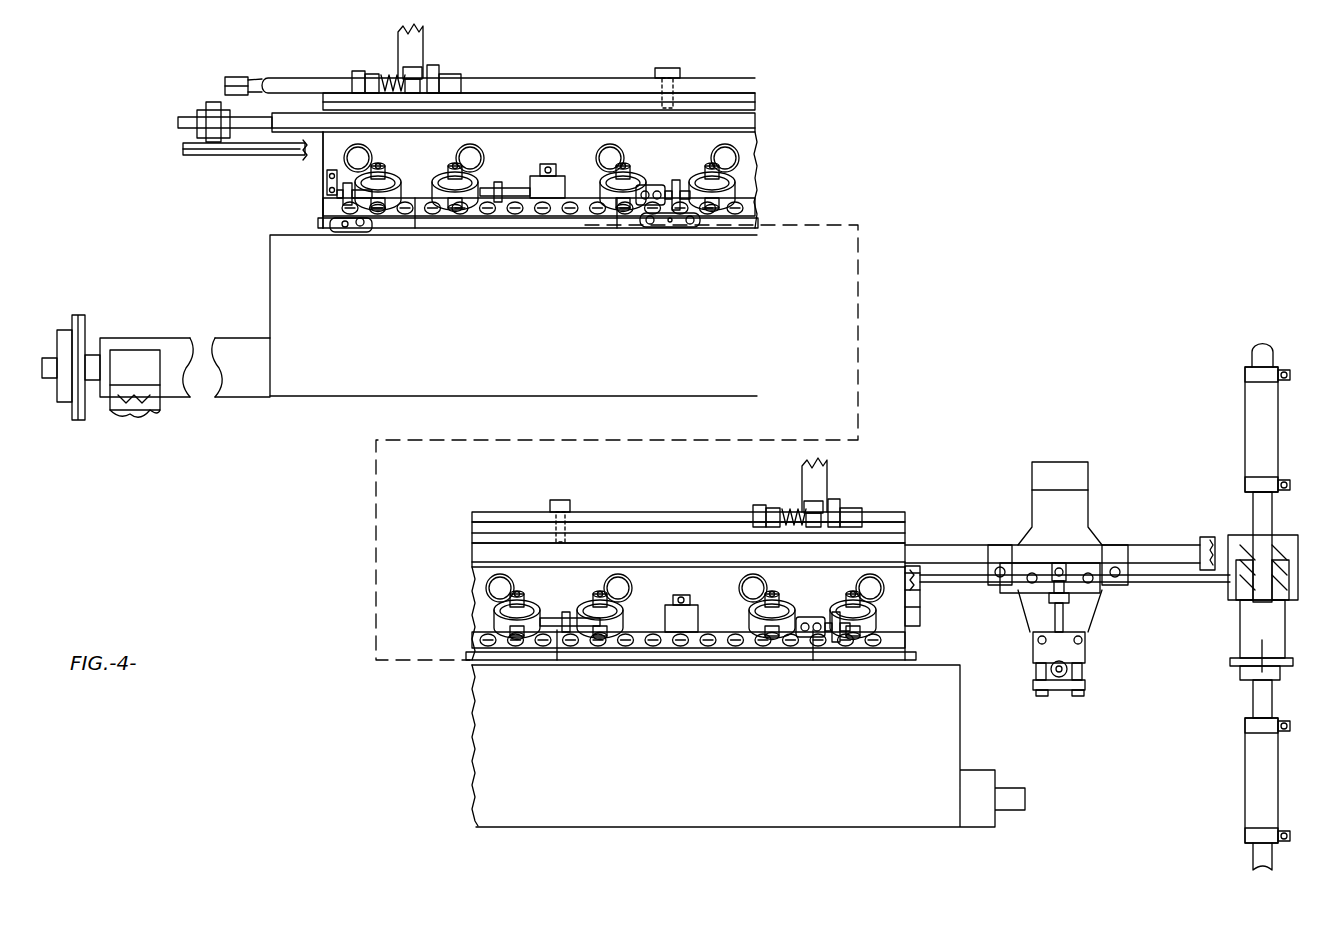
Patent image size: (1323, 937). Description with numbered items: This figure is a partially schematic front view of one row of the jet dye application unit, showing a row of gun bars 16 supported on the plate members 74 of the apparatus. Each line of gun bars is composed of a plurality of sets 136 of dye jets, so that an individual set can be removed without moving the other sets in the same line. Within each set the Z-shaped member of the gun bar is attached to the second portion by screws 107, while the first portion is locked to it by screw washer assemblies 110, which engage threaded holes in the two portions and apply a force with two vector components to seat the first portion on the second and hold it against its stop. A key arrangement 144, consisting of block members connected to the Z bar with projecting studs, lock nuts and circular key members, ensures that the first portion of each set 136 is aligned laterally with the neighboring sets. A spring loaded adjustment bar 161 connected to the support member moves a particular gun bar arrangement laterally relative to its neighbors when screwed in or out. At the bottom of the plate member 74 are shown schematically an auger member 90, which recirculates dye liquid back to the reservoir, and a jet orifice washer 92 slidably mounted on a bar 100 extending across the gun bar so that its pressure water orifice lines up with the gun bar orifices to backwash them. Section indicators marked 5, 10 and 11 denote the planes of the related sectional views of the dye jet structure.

The gun bar 16 is at (462, 236).
The plate member 74 is at (328, 160).
The auger member 90 is at (232, 396).
The jet orifice washer 92 is at (183, 150).
The bar 100 is at (966, 550).
The screws 107 is at (338, 212).
The screw washer assembly 110 is at (478, 184).
The sets of dye jets 136 is at (372, 230).
The key arrangement 144 is at (665, 178).
The spring loaded adjustment bar 161 is at (308, 79).
The section line 5 is at (600, 415).
The section line 10 is at (565, 710).
The section line 11 is at (444, 153).